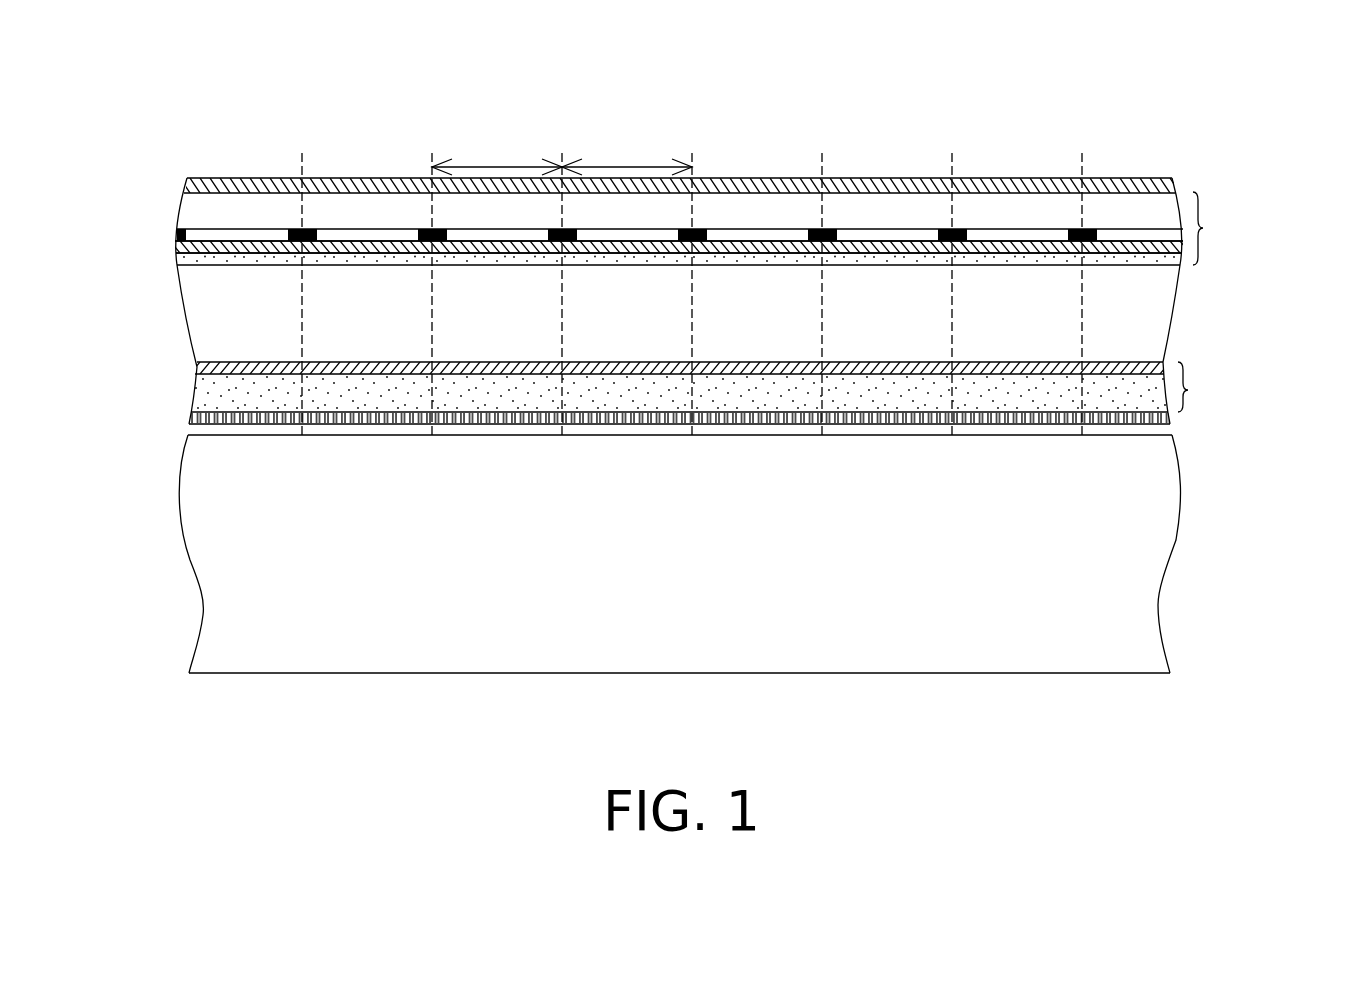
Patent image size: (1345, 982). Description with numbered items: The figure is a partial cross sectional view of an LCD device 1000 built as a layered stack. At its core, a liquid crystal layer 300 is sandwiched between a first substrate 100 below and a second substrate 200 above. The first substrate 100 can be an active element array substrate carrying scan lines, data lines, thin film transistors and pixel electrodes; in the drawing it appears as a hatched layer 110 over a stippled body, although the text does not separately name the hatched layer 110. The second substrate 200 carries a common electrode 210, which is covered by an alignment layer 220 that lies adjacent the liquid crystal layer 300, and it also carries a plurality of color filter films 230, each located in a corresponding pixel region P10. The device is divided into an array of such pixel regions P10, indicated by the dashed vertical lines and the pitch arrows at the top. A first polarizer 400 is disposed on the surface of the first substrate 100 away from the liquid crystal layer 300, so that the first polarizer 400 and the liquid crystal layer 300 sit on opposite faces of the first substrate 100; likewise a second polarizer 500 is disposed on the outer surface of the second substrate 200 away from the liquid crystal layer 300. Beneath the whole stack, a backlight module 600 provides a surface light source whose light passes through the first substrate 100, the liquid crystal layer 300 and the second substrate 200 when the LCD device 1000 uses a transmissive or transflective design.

The LCD device 1000 is at (1230, 811).
The first substrate 100 is at (703, 367).
The lower insulating layer 110 is at (198, 367).
The second substrate 200 is at (694, 209).
The common electrode 210 is at (177, 246).
The alignment layer 220 is at (175, 257).
The color filter films 230 is at (237, 233).
The liquid crystal layer 300 is at (1162, 296).
The first polarizer 400 is at (1170, 420).
The second polarizer 500 is at (1173, 183).
The backlight module 600 is at (1150, 565).
The pixel regions P10 is at (492, 167).